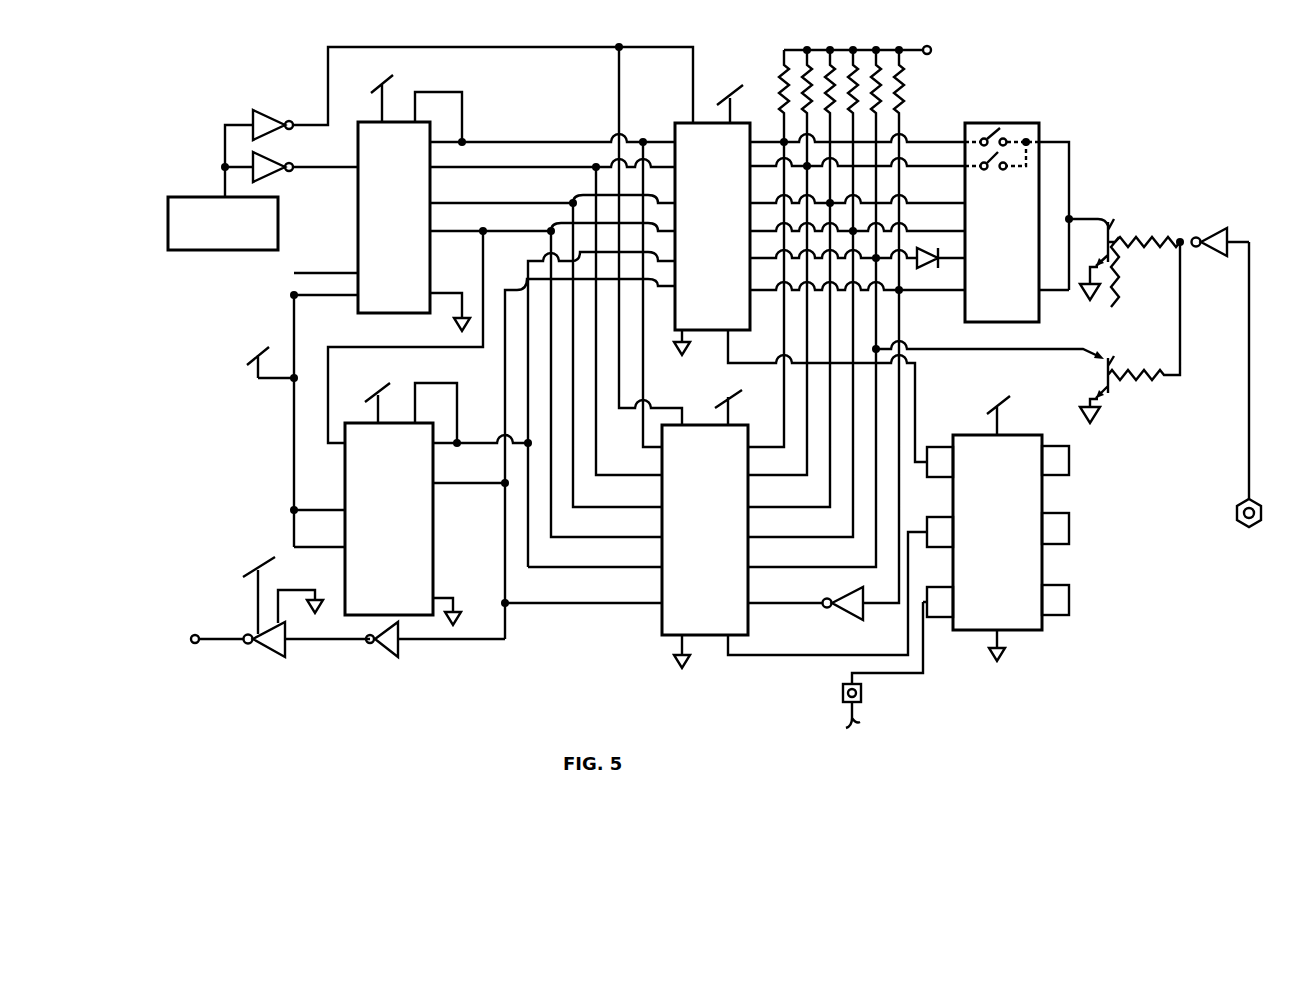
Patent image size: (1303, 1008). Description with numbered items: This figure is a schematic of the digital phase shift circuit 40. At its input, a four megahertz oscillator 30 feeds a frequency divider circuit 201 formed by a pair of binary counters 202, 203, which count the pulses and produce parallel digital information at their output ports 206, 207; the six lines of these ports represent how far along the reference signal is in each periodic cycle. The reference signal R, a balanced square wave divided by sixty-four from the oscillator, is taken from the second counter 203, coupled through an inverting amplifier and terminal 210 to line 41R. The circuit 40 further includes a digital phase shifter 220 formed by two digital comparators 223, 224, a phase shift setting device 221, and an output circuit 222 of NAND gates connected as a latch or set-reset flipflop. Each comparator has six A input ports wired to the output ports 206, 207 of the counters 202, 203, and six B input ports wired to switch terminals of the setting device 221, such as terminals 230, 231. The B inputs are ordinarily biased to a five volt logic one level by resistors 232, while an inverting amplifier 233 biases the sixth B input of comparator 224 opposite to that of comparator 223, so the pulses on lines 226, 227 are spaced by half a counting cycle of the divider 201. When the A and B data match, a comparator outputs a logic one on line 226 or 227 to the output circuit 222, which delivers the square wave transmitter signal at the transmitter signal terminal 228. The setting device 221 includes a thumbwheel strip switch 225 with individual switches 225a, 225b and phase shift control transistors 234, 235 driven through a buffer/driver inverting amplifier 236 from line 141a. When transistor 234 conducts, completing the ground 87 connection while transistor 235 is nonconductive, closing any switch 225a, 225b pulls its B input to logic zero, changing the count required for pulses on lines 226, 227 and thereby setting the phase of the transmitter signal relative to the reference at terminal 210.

The oscillator 30 is at (186, 197).
The digital phase shift circuit 40 is at (486, 39).
The frequency divider circuit 201 is at (475, 104).
The binary counter 202 is at (358, 228).
The binary counter 203 is at (345, 472).
The parallel output port 206 is at (478, 138).
The parallel output port 207 is at (476, 425).
The terminal 210 is at (196, 644).
The line 41R is at (242, 635).
The digital phase shifter 220 is at (738, 70).
The phase shift setting device 221 is at (977, 78).
The output circuit 222 is at (1080, 527).
The digital comparator 223 is at (675, 120).
The digital comparator 224 is at (662, 630).
The thumbwheel strip switch 225 is at (990, 122).
The thumbwheel switch 225a is at (1006, 135).
The thumbwheel switch 225b is at (995, 168).
The output line 226 is at (918, 388).
The output line 227 is at (826, 645).
The transmitter signal terminal 228 is at (843, 690).
The switch terminal 230 is at (918, 140).
The switch terminal 231 is at (940, 170).
The resistor 232 is at (912, 87).
The inverting amplifier 233 is at (855, 597).
The phase shift control transistor 234 is at (1111, 219).
The phase shift control transistor 235 is at (1113, 360).
The buffer/driver inverting amplifier 236 is at (1205, 237).
The ground 87 is at (1100, 292).
The line 141a is at (1249, 326).